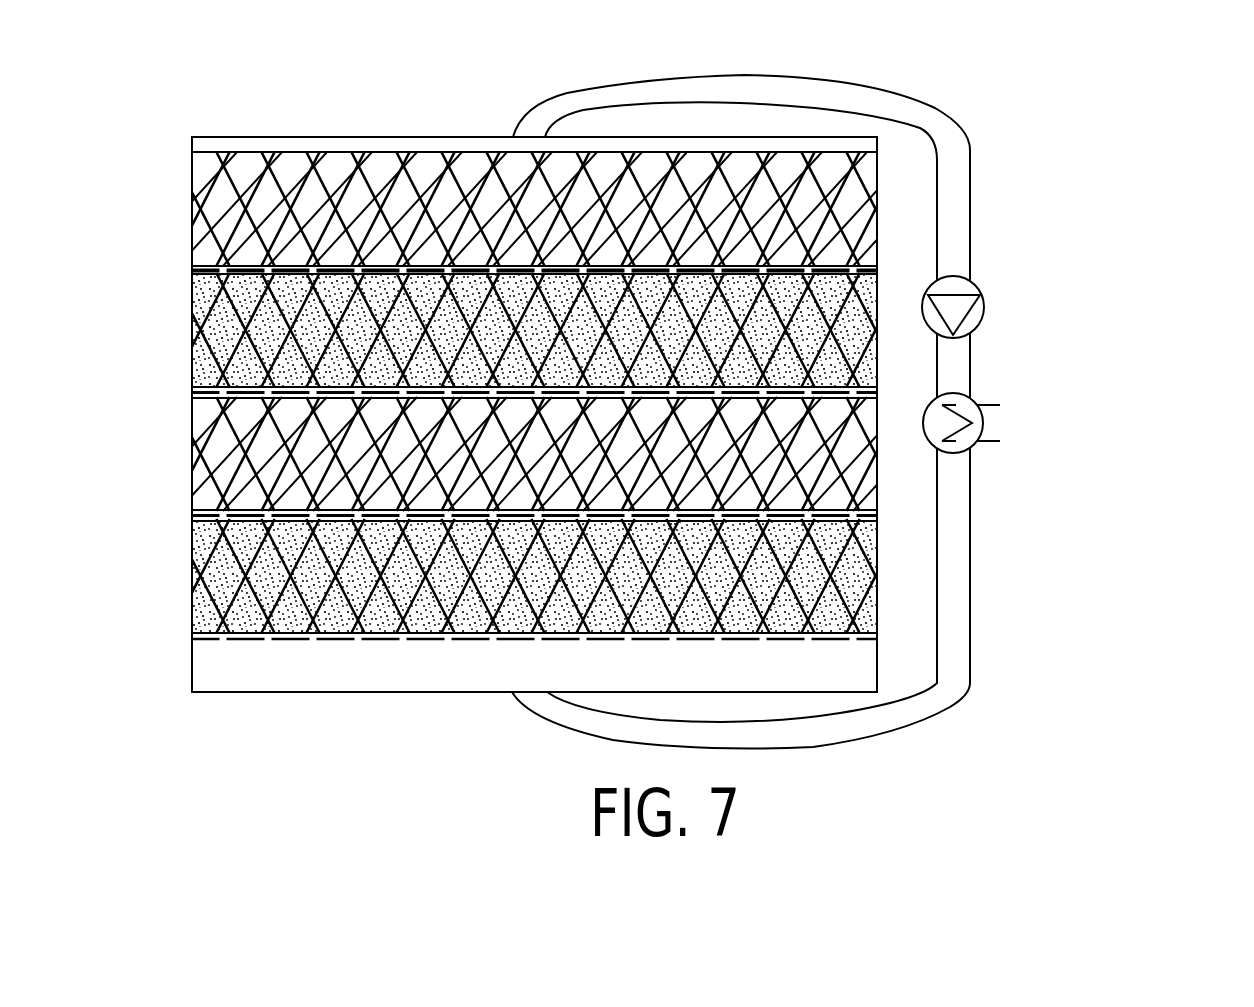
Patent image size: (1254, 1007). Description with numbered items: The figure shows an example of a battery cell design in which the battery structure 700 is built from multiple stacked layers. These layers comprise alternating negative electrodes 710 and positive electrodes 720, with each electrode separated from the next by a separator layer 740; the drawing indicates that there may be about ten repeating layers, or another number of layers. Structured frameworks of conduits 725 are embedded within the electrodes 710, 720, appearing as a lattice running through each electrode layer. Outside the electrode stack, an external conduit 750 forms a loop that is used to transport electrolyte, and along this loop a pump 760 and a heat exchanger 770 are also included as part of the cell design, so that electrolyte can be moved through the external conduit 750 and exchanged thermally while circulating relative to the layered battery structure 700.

The battery structure 700 is at (212, 105).
The negative electrode 710 is at (192, 209).
The positive electrode 720 is at (192, 331).
The structured frameworks of conduits 725 is at (327, 164).
The separator layer 740 is at (192, 267).
The external conduit 750 is at (972, 187).
The pump 760 is at (1043, 283).
The heat exchanger 770 is at (1093, 445).